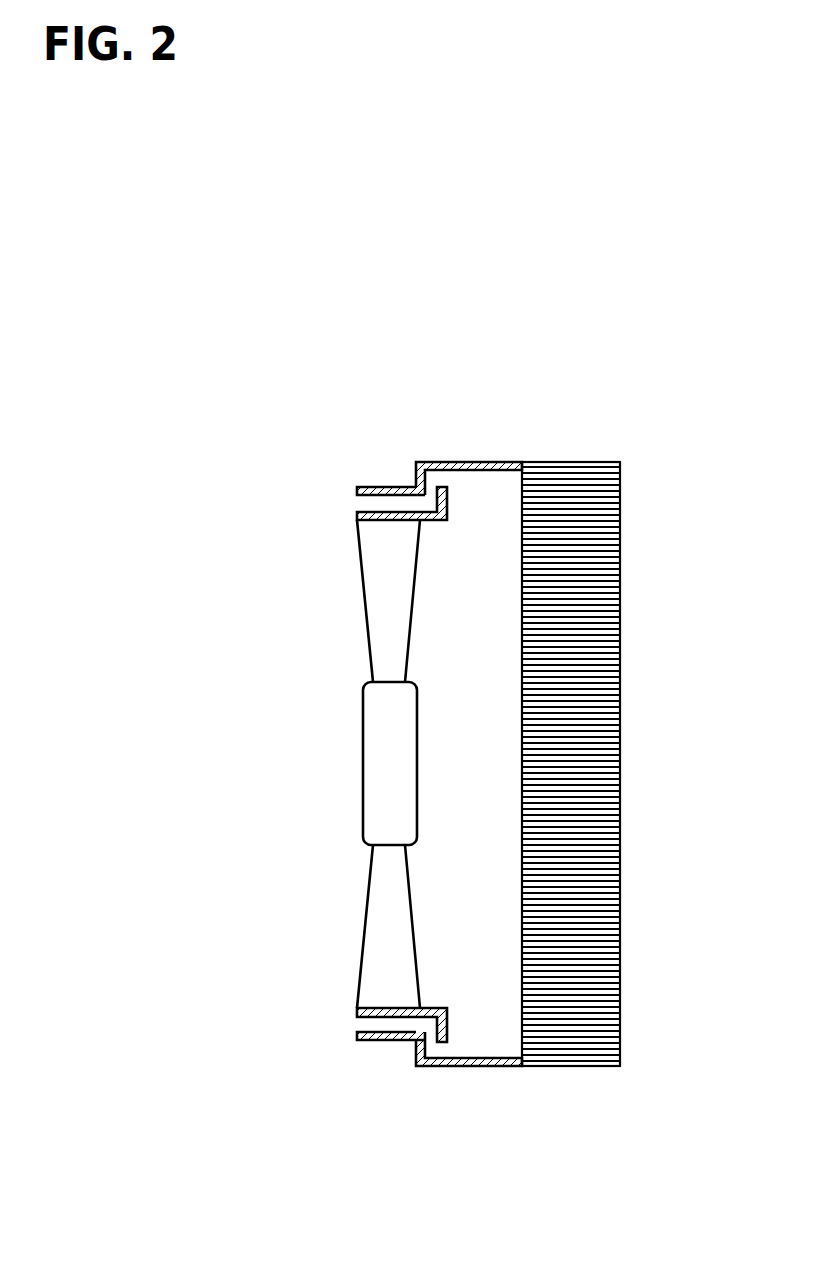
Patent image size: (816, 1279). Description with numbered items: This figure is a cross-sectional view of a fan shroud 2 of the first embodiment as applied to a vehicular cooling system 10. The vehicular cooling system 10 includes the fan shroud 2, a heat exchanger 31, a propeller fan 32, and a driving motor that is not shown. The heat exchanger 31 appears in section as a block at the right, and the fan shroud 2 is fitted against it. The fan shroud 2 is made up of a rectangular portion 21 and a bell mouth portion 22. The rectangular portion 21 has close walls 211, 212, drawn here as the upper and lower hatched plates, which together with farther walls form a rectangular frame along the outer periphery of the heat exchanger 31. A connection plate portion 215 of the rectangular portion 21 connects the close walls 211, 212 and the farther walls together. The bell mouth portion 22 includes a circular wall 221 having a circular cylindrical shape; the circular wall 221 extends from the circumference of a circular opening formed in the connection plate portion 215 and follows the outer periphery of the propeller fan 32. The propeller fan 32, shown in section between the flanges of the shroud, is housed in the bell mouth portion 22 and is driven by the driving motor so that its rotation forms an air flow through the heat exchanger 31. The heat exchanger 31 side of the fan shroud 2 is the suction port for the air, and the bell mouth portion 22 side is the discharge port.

The vehicular cooling system 10 is at (568, 366).
The fan shroud 2 is at (329, 471).
The rectangular portion 21 is at (420, 770).
The bell mouth portion 22 is at (374, 485).
The close wall 211 is at (472, 462).
The close wall 212 is at (477, 1067).
The connection plate portion 215 is at (418, 1051).
The circular wall 221 is at (370, 1042).
The heat exchanger 31 is at (620, 845).
The propeller fan 32 is at (367, 900).